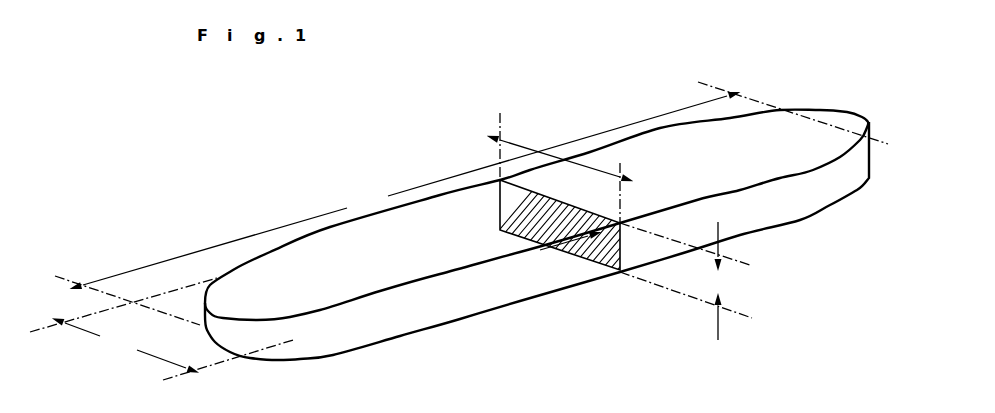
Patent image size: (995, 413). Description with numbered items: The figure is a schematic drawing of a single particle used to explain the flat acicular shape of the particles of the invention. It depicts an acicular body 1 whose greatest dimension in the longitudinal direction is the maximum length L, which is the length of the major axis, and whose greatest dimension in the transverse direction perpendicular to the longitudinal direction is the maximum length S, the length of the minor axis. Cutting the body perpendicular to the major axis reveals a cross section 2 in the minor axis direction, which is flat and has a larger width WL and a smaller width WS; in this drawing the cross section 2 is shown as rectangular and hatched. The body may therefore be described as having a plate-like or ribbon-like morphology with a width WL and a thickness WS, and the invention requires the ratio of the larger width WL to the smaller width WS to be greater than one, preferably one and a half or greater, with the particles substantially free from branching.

The acicular body 1 is at (758, 142).
The cross section 2 is at (497, 214).
The maximum length in the longitudinal direction L is at (471, 203).
The maximum length in the transverse direction S is at (161, 329).
The larger width WL is at (521, 140).
The smaller width WS is at (760, 283).